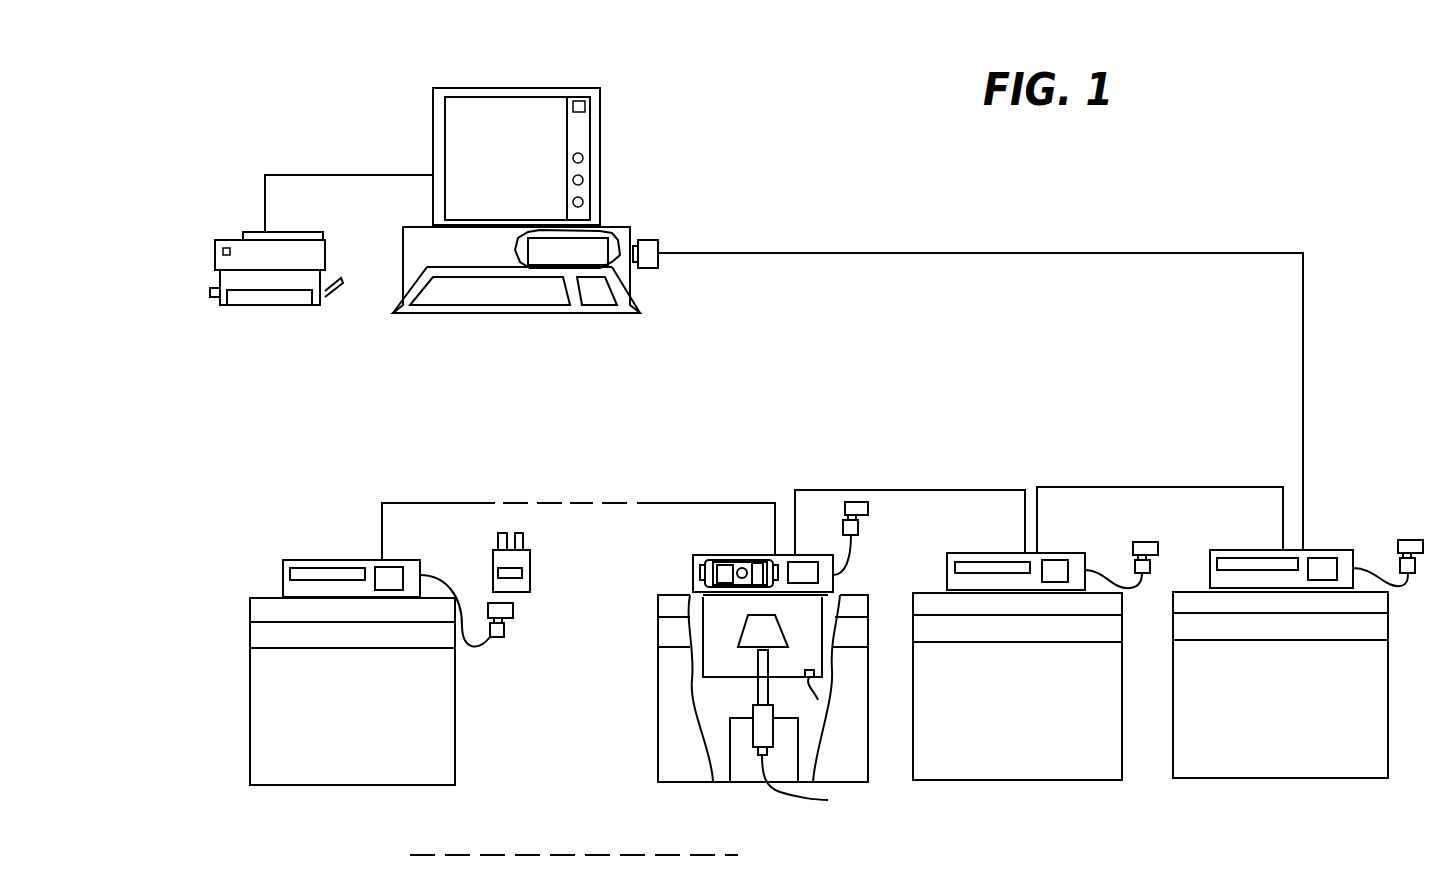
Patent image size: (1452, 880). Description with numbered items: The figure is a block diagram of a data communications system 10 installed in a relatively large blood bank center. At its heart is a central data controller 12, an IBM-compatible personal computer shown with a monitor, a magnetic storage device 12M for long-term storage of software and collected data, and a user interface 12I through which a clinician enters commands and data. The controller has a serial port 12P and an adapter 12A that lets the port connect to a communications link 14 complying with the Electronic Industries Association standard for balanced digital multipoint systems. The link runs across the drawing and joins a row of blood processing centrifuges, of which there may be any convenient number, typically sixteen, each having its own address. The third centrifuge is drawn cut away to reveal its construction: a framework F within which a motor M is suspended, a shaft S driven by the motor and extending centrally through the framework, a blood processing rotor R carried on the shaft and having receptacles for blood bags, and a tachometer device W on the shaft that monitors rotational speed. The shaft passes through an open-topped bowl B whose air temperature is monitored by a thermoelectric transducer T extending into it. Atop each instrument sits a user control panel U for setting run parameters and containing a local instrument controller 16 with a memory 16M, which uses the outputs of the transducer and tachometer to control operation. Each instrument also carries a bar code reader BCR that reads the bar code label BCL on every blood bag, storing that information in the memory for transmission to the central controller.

The data communications system 10 is at (1297, 155).
The central data controller 12 is at (452, 84).
The user interface 12I is at (485, 290).
The magnetic storage device 12M is at (600, 247).
The port 12P is at (640, 240).
The adapter 12A is at (658, 263).
The communications link 14 is at (1060, 250).
The local instrument controller 16 is at (745, 560).
The memory 16M is at (725, 560).
The bar code label BCL is at (530, 557).
The bar code reader BCR is at (513, 612).
The user control panel U is at (688, 582).
The bowl B is at (840, 605).
The blood processing rotor R is at (745, 628).
The thermoelectric transducer T is at (816, 670).
The shaft S is at (757, 693).
The motor M is at (773, 738).
The framework F is at (730, 742).
The tachometer device W is at (804, 784).